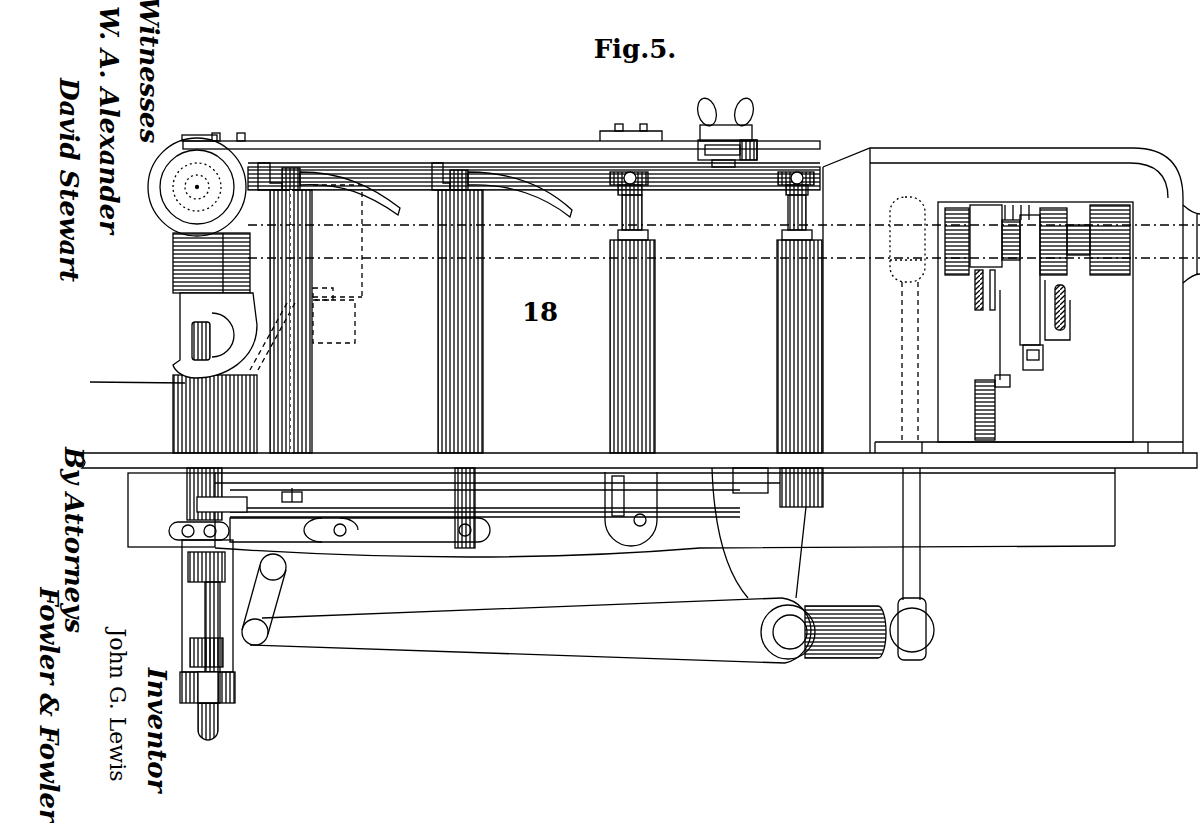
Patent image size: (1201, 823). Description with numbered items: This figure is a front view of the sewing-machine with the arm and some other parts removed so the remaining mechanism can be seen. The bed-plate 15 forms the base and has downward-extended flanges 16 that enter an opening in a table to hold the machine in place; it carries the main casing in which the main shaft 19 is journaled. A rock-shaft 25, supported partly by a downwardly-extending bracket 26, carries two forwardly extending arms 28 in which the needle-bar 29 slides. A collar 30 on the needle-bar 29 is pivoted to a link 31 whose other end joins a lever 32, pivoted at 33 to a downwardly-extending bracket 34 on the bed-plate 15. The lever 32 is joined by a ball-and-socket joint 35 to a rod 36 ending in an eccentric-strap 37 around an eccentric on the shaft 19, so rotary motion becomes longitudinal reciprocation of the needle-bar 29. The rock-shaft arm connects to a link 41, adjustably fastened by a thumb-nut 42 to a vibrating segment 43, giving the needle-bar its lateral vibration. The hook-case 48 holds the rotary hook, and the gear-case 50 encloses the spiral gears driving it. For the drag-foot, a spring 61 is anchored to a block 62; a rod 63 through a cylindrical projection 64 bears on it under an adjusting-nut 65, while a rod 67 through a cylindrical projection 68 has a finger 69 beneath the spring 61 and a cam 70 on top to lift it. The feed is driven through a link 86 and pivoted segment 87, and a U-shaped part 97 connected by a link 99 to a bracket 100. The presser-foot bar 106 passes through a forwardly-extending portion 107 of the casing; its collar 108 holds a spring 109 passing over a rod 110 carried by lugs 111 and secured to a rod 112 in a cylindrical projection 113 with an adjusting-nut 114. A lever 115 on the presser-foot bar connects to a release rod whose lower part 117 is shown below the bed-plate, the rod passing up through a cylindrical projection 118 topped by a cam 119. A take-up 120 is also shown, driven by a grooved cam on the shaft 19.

The bed-plate 15 is at (560, 453).
The downward-extended flanges 16 is at (621, 512).
The main shaft 19 is at (1081, 250).
The rock-shaft 25 is at (203, 612).
The downwardly-extending bracket 26 is at (235, 687).
The arms 28 is at (200, 660).
The needle-bar 29 is at (218, 722).
The collar 30 is at (198, 567).
The link 31 is at (265, 590).
The lever 32 is at (530, 630).
The pivot 33 is at (790, 645).
The downwardly-extending bracket 34 is at (767, 533).
The ball-and-socket joint 35 is at (935, 629).
The rod 36 is at (921, 500).
The eccentric-strap 37 is at (906, 206).
The link 41 is at (440, 146).
The thumb-nut 42 is at (727, 112).
The vibrating segment 43 is at (757, 148).
The hook-case 48 is at (195, 152).
The gear-case 50 is at (175, 262).
The spring 61 is at (548, 490).
The block 62 is at (750, 468).
The rod 63 is at (642, 209).
The cylindrical projection 64 is at (645, 350).
The adjusting-nut 65 is at (645, 233).
The rod 67 is at (290, 168).
The cylindrical projection 68 is at (302, 393).
The finger 69 is at (293, 503).
The cam 70 is at (337, 183).
The link 86 is at (1062, 313).
The pivoted segment 87 is at (1035, 368).
The U-shaped part 97 is at (978, 288).
The link 99 is at (998, 358).
The bracket 100 is at (997, 414).
The presser-foot bar 106 is at (200, 340).
The forwardly-extending portion 107 is at (183, 409).
The collar 108 is at (192, 503).
The spring 109 is at (509, 512).
The rod 110 is at (647, 522).
The lugs 111 is at (612, 517).
The rod 112 is at (790, 207).
The cylindrical projection 113 is at (790, 296).
The adjusting-nut 114 is at (805, 237).
The lever 115 is at (329, 530).
The rod 117 is at (459, 548).
The cylindrical projection 118 is at (448, 340).
The cam 119 is at (512, 181).
The take-up 120 is at (111, 382).